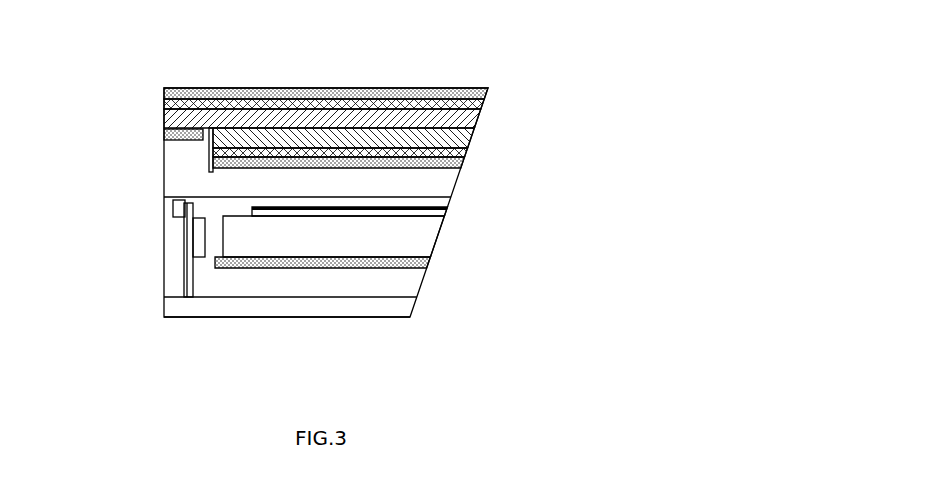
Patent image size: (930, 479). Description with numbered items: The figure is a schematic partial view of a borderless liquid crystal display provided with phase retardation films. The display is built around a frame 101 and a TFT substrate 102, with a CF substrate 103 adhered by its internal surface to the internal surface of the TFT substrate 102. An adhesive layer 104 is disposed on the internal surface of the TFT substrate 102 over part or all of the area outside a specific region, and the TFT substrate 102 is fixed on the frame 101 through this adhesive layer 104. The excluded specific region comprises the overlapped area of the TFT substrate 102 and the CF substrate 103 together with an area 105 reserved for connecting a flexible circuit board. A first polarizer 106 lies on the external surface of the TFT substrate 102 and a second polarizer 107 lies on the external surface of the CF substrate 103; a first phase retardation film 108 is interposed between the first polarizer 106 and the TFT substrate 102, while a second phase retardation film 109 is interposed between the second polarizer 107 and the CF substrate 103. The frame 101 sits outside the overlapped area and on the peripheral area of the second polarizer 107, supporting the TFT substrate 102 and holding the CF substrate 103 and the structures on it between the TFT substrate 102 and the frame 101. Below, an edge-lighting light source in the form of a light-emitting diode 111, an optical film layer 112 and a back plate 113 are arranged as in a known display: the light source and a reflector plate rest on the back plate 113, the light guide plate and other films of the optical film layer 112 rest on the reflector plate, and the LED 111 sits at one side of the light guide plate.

The frame 101 is at (408, 187).
The TFT substrate 102 is at (178, 115).
The CF substrate 103 is at (587, 143).
The adhesive layer 104 is at (163, 133).
The area for connecting a flexible circuit board 105 is at (211, 132).
The first polarizer 106 is at (537, 65).
The second polarizer 107 is at (245, 164).
The first phase retardation film 108 is at (587, 103).
The second phase retardation film 109 is at (213, 155).
The light-emitting diode 111 is at (203, 237).
The optical film layer 112 is at (413, 230).
The back plate 113 is at (393, 314).